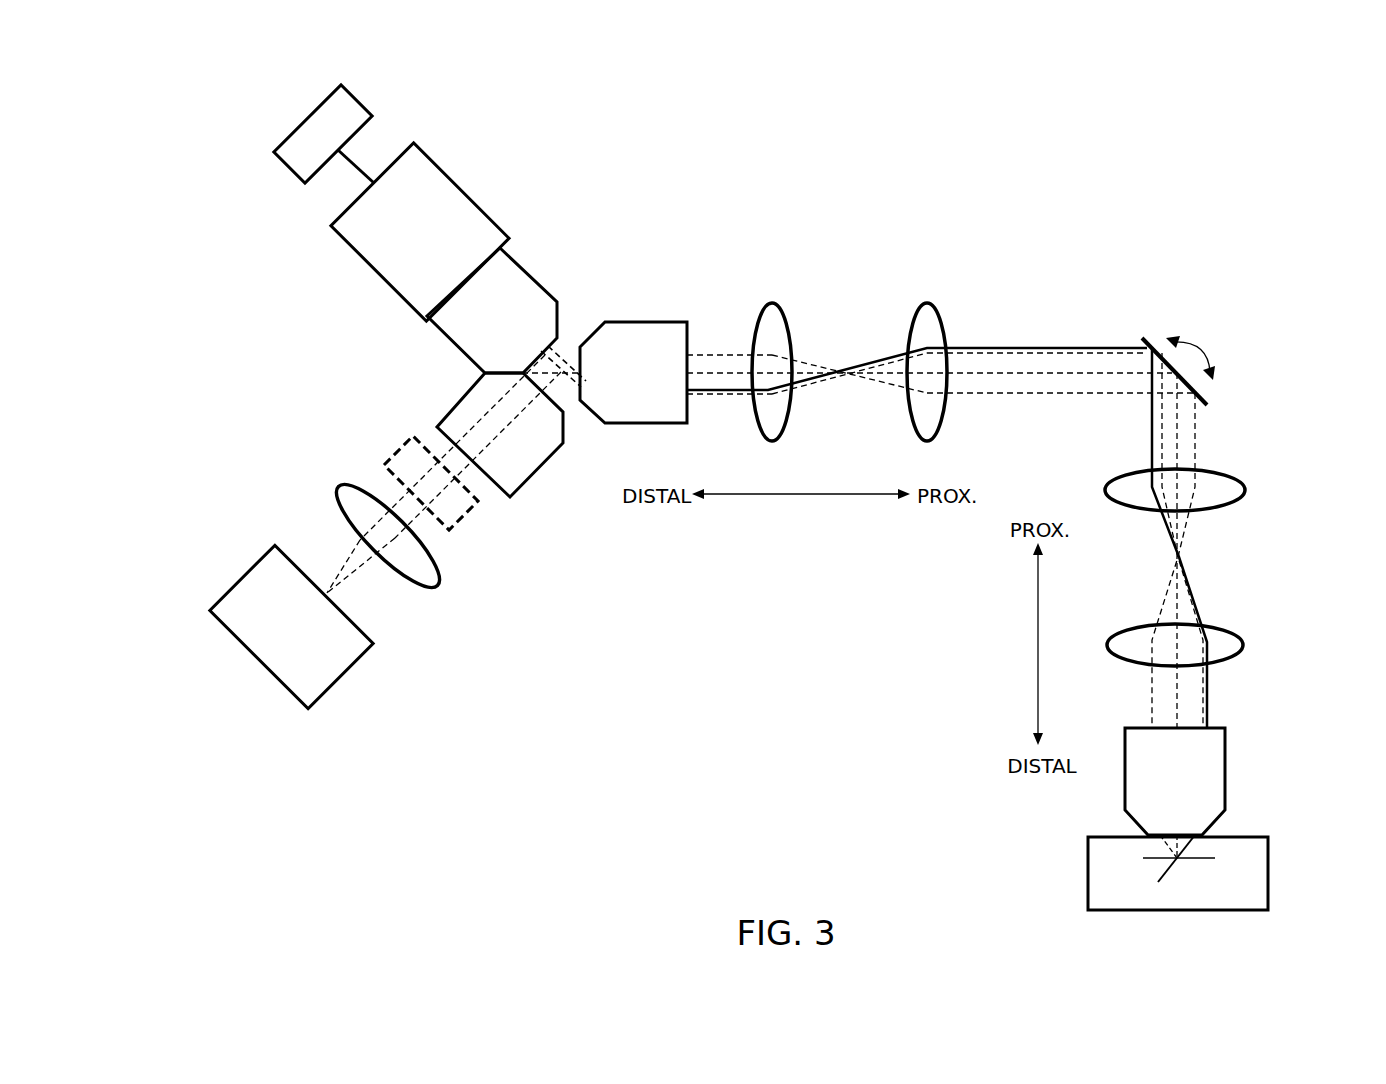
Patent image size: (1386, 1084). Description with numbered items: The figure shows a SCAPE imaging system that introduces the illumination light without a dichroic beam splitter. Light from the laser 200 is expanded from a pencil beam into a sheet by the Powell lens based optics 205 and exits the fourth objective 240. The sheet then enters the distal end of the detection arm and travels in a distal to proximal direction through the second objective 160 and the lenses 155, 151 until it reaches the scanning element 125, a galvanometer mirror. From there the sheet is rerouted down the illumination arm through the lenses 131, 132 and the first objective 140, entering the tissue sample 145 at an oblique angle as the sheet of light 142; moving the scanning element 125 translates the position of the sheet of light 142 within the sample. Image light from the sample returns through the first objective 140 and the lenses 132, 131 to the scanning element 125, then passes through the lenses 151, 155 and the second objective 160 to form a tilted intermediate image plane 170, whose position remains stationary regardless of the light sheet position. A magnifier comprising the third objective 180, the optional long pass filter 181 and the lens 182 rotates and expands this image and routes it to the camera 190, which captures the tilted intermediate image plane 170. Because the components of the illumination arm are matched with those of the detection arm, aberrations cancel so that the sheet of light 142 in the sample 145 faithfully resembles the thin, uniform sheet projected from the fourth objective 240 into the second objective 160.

The laser 200 is at (362, 102).
The Powell lens based optics 205 is at (445, 167).
The fourth objective lens 240 is at (520, 255).
The intermediate image plane 170 is at (553, 362).
The third objective 180 is at (460, 397).
The long pass filter 181 is at (408, 440).
The lens 182 is at (353, 482).
The camera 190 is at (260, 558).
The second objective 160 is at (630, 428).
The lens 155 is at (777, 302).
The lens 151 is at (927, 302).
The scanning element 125 is at (1207, 393).
The lens 131 is at (1238, 502).
The lens 132 is at (1242, 653).
The first objective 140 is at (1230, 777).
The tissue sample 145 is at (1270, 873).
The sheet of light 142 is at (1170, 877).